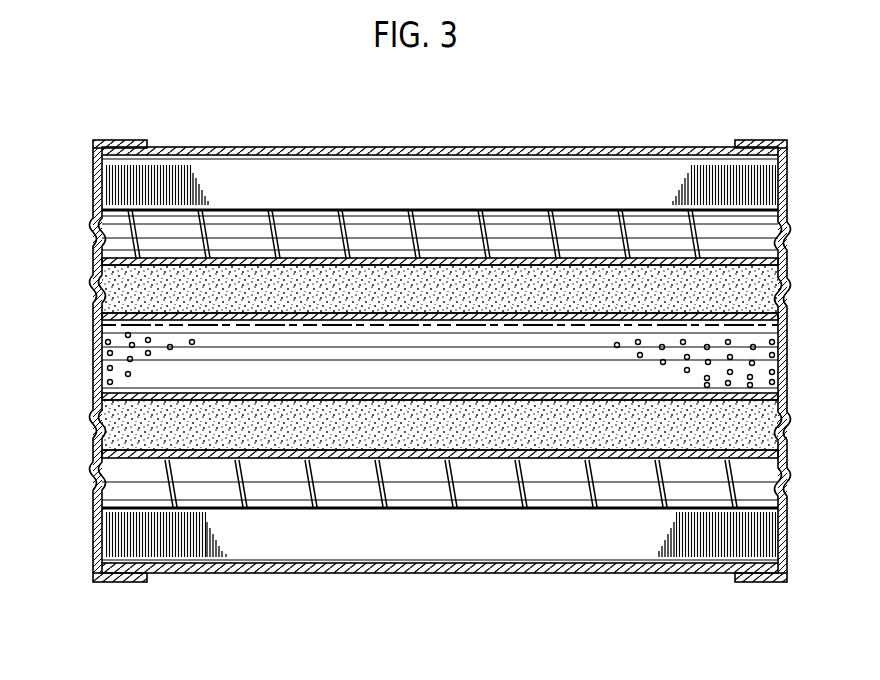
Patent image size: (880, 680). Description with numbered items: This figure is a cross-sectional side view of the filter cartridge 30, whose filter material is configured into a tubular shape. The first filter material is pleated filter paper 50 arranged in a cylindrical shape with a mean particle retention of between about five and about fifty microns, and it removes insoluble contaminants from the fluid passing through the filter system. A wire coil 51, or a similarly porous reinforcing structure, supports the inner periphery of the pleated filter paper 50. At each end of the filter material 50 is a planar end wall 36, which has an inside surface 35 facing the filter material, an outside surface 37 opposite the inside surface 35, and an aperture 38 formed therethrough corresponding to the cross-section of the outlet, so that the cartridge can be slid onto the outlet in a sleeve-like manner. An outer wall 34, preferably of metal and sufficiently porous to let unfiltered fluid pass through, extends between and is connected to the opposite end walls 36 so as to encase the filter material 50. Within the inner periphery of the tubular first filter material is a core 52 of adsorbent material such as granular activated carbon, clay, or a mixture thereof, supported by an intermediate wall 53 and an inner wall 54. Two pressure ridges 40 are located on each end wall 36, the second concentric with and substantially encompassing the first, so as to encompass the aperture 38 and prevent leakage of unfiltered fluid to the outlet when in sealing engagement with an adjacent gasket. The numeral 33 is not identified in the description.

The filter cartridge 30 is at (598, 117).
The fins 33 is at (518, 240).
The outer wall 34 is at (236, 147).
The inside surface 35 is at (97, 500).
The end wall 36 is at (93, 168).
The outside surface 37 is at (97, 465).
The aperture 38 is at (97, 397).
The pressure ridge 40 is at (93, 225).
The pleated filter paper 50 is at (316, 185).
The wire coil 51 is at (428, 208).
The core 52 is at (405, 437).
The intermediate wall 53 is at (332, 462).
The inner wall 54 is at (498, 400).